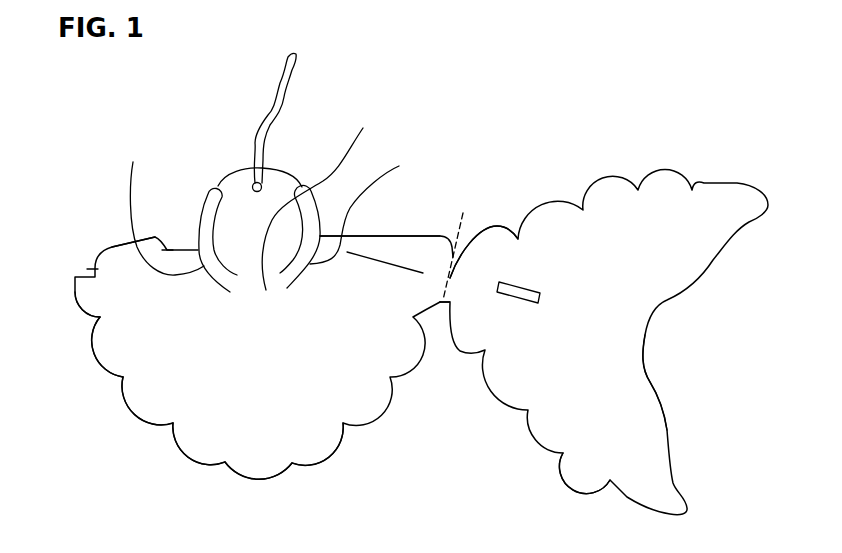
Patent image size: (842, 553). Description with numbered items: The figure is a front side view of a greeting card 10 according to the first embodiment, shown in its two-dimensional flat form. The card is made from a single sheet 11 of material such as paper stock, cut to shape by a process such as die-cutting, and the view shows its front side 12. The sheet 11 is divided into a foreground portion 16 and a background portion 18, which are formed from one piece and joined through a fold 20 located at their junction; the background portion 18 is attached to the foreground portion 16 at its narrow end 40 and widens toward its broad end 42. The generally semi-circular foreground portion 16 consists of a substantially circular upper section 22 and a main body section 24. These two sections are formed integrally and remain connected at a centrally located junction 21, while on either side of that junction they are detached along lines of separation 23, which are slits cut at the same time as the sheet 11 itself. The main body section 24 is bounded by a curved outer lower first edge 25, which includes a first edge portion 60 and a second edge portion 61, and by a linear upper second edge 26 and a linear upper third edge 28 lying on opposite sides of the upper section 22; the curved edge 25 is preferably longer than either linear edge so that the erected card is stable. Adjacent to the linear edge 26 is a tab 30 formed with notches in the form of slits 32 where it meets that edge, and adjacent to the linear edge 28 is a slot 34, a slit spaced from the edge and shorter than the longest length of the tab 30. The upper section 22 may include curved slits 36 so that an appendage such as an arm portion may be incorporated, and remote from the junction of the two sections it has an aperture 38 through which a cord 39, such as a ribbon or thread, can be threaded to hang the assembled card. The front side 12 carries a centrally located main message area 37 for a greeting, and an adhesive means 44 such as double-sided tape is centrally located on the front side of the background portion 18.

The greeting card 10 is at (106, 137).
The sheet 11 is at (205, 438).
The front side 12 is at (253, 356).
The foreground portion 16 is at (255, 455).
The background portion 18 is at (568, 428).
The fold 20 is at (458, 247).
The junction 21 is at (322, 200).
The upper section 22 is at (290, 173).
The lines of separation 23 is at (270, 208).
The main body section 24 is at (122, 338).
The curved outer lower first edge 25 is at (147, 425).
The linear upper second edge 26 is at (195, 243).
The linear upper third edge 28 is at (382, 233).
The tab 30 is at (120, 243).
The slits 32 is at (90, 268).
The slot 34 is at (403, 267).
The curved slits 36 is at (302, 210).
The main message area 37 is at (290, 415).
The aperture 38 is at (253, 184).
The cord 39 is at (285, 110).
The narrow end 40 is at (448, 313).
The broad end 42 is at (662, 393).
The adhesive means 44 is at (530, 290).
The first edge portion 60 is at (502, 226).
The second edge portion 61 is at (95, 313).